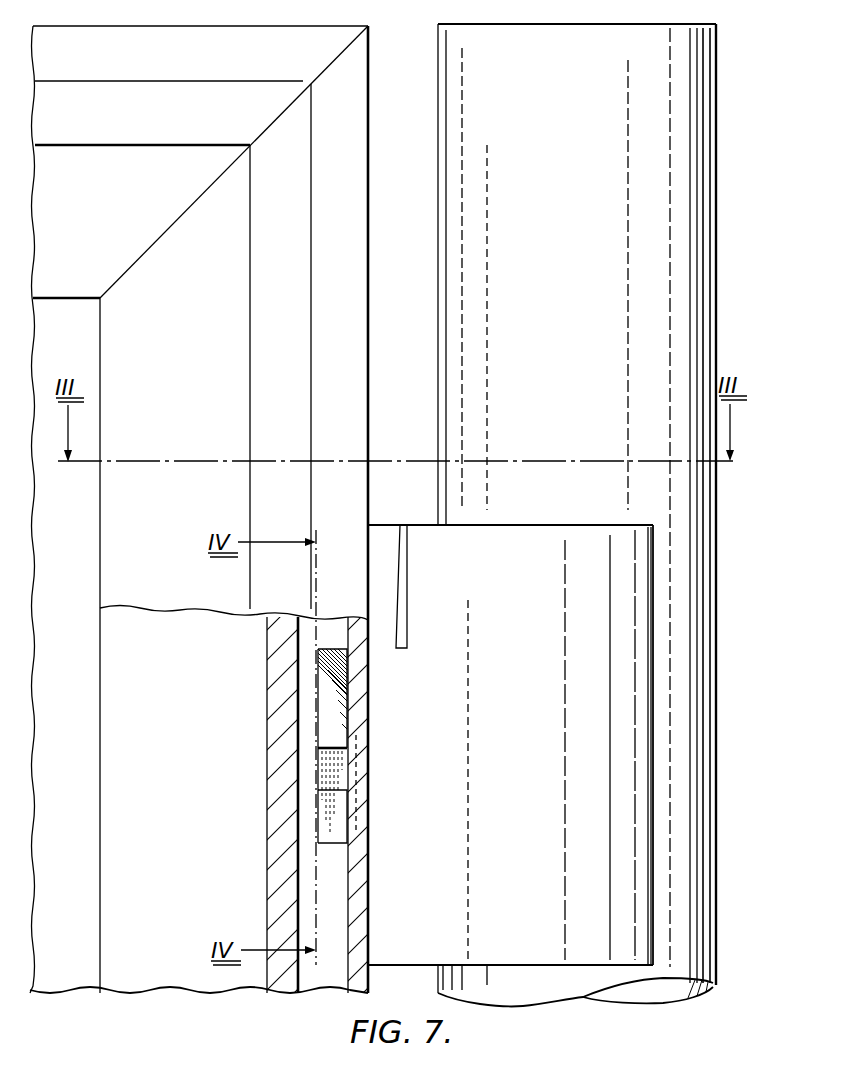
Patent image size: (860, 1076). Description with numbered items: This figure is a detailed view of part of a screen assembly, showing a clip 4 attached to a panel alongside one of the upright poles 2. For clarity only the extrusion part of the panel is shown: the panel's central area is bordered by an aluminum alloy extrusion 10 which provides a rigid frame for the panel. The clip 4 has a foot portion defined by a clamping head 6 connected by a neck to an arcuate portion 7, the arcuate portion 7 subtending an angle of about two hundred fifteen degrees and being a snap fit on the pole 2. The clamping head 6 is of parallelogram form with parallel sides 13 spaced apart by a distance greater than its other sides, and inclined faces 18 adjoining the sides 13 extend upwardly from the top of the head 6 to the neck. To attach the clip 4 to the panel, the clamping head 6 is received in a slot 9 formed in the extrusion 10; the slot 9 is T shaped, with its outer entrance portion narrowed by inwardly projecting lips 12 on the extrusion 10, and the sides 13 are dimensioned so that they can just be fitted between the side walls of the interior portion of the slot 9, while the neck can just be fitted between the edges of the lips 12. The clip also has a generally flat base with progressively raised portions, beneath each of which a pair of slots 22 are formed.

The upright pole 2 is at (452, 133).
The clip 4 is at (496, 514).
The clamping head 6 is at (316, 776).
The arcuate portion 7 is at (597, 541).
The slot 9 is at (301, 637).
The aluminum alloy extrusion 10 is at (187, 335).
The inwardly projecting lips 12 is at (360, 900).
The parallel sides of the head 13 is at (333, 845).
The inclined faces 18 is at (356, 766).
The slots 22 is at (401, 550).